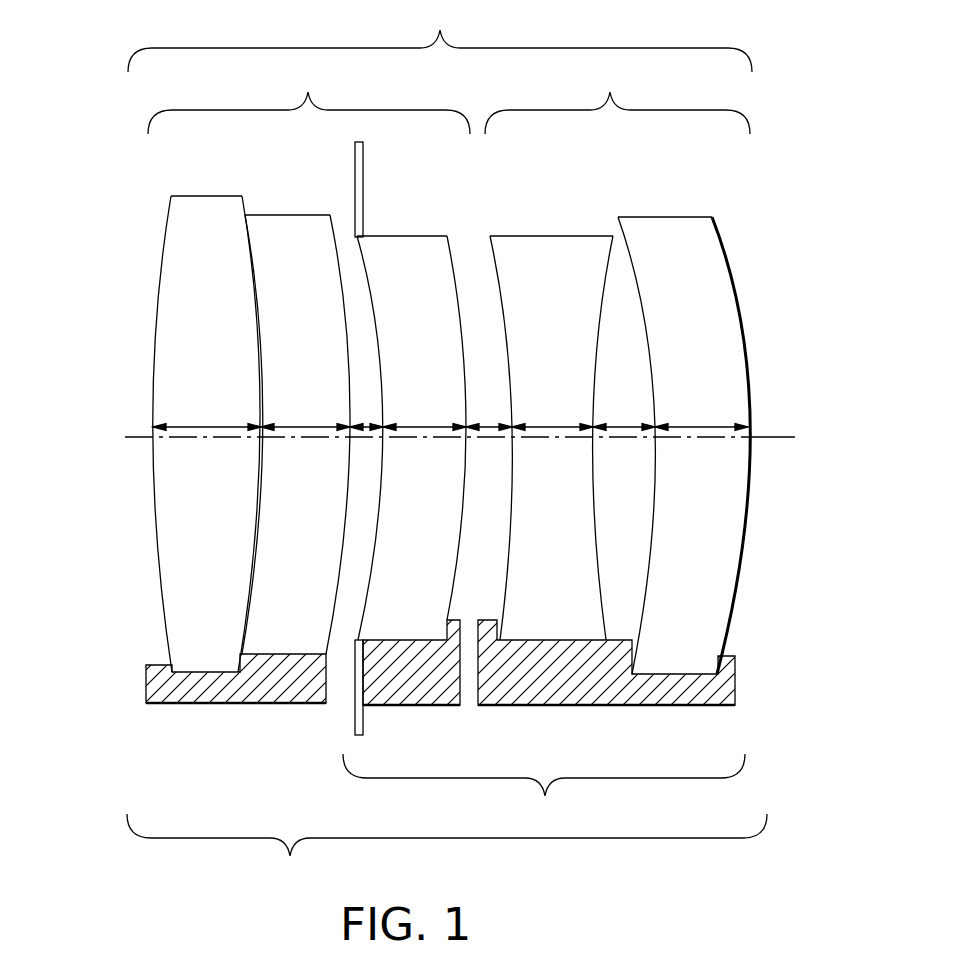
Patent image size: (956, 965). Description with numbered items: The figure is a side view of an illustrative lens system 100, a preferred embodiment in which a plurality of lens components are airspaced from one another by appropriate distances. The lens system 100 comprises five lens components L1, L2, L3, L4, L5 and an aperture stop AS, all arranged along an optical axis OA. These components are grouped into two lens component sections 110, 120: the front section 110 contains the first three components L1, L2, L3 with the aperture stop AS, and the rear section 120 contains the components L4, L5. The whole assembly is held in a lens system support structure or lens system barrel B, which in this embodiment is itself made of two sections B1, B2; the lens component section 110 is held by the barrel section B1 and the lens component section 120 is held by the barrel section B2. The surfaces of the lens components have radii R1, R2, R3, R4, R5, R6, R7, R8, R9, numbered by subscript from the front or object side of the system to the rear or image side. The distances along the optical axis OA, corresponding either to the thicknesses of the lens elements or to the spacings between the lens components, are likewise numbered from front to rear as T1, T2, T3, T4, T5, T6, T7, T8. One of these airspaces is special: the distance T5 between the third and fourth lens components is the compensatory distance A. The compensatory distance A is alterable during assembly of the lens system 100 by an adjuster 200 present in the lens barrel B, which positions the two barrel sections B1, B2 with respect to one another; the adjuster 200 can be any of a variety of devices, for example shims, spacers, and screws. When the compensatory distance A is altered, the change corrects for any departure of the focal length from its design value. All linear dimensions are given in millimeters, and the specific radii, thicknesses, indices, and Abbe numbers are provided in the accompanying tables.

The lens system 100 is at (440, 37).
The lens component section 110 is at (309, 98).
The lens component section 120 is at (617, 98).
The adjuster 200 is at (544, 796).
The lens system barrel B is at (447, 855).
The lens barrel section B1 is at (410, 733).
The lens barrel section B2 is at (737, 682).
The aperture stop AS is at (322, 727).
The optical axis OA is at (482, 440).
The compensatory distance A is at (487, 455).
The lens component L1 is at (181, 436).
The lens component L2 is at (280, 451).
The lens component L3 is at (437, 477).
The lens component L4 is at (557, 466).
The lens component L5 is at (705, 466).
The surface radius R1 is at (168, 226).
The surface radius R2 is at (228, 399).
The surface radius R3 is at (317, 405).
The surface radius R4 is at (368, 245).
The surface radius R5 is at (452, 245).
The surface radius R6 is at (500, 290).
The surface radius R7 is at (589, 406).
The surface radius R8 is at (620, 228).
The surface radius R9 is at (724, 250).
The distance along optical axis T1 is at (195, 425).
The distance along optical axis T2 is at (290, 425).
The distance along optical axis T3 is at (372, 425).
The distance along optical axis T4 is at (425, 425).
The distance along optical axis T5 is at (495, 425).
The distance along optical axis T6 is at (555, 425).
The distance along optical axis T7 is at (625, 425).
The distance along optical axis T8 is at (705, 425).